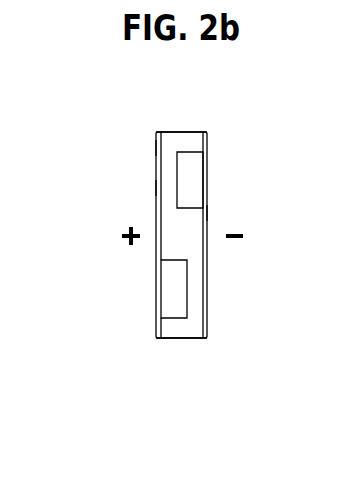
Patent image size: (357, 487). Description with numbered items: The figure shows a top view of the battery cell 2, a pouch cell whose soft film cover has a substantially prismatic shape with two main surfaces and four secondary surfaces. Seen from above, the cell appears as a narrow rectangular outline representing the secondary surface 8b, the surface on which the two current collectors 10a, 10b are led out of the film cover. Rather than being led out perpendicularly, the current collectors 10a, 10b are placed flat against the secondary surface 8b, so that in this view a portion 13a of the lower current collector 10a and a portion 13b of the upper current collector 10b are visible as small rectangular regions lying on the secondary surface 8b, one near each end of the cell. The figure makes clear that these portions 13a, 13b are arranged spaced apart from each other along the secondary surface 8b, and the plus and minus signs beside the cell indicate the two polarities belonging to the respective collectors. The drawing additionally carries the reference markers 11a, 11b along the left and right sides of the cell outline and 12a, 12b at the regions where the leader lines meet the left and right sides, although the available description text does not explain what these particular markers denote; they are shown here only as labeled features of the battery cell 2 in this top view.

The battery cell 2 is at (247, 322).
The secondary surface 8b is at (160, 148).
The current collector 10a is at (173, 308).
The current collector 10b is at (190, 176).
The first side wall 11a is at (157, 287).
The second side wall 11b is at (206, 160).
The first contact region 12a is at (158, 188).
The second contact region 12b is at (206, 213).
The portion of current collector 13a is at (168, 295).
The portion of current collector 13b is at (200, 160).